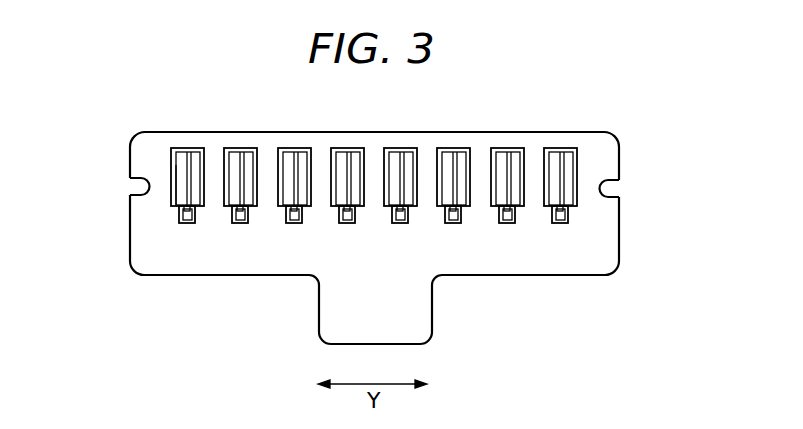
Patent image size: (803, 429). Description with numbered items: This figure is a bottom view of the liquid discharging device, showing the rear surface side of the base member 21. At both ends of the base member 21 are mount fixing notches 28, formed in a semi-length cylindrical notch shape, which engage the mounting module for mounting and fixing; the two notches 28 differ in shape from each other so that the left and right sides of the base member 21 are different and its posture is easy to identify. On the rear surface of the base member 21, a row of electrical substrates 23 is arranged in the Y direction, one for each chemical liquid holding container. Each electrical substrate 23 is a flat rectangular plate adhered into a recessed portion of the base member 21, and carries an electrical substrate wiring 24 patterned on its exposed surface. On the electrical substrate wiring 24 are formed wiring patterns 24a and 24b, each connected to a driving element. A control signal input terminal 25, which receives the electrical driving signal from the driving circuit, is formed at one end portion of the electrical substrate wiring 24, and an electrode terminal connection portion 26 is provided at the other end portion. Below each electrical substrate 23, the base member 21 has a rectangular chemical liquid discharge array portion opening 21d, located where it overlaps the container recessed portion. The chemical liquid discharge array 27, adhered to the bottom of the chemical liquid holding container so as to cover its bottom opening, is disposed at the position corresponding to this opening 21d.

The base member 21 is at (527, 262).
The chemical liquid discharge array portion opening 21d is at (187, 224).
The electrical substrate 23 is at (558, 148).
The electrical substrate wiring 24 is at (160, 155).
The wiring pattern 24a is at (192, 151).
The wiring pattern 24b is at (182, 149).
The control signal input terminal 25 is at (172, 160).
The electrode terminal connection portion 26 is at (180, 193).
The chemical liquid discharge array 27 is at (242, 224).
The mount fixing notch 28 is at (134, 187).